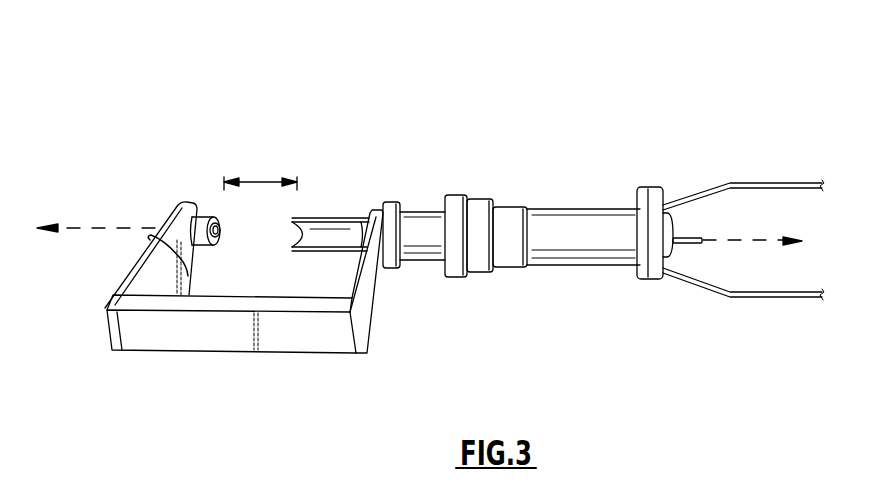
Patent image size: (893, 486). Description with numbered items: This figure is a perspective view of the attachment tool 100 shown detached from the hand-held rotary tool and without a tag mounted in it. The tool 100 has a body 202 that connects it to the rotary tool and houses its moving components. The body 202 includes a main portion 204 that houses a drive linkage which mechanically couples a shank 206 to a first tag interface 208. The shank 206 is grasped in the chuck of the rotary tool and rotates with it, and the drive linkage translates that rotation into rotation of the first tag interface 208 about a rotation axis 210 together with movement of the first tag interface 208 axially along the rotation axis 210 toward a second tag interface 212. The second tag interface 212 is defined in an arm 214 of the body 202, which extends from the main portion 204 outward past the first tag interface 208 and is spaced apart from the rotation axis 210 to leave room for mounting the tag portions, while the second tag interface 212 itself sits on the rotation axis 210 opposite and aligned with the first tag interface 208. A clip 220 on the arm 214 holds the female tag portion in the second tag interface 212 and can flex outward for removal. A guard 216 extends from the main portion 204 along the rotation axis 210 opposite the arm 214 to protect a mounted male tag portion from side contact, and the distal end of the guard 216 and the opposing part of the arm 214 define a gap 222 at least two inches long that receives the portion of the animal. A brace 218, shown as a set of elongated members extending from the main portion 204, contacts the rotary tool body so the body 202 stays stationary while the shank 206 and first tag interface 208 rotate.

The tool 100 is at (697, 95).
The body 202 is at (518, 267).
The main portion 204 is at (525, 228).
The shank 206 is at (692, 237).
The first tag interface 208 is at (363, 219).
The rotation axis 210 is at (109, 228).
The second tag interface 212 is at (212, 217).
The arm 214 is at (205, 337).
The guard 216 is at (310, 218).
The brace 218 is at (766, 185).
The clip 220 is at (190, 261).
The gap 222 is at (262, 182).